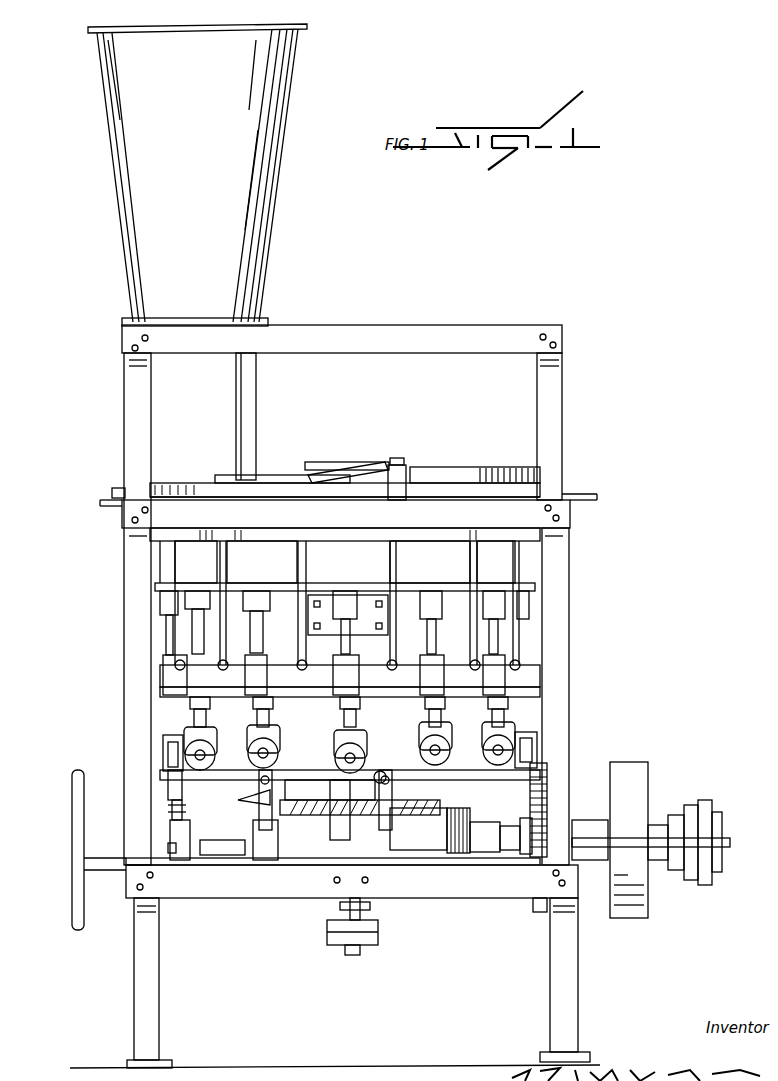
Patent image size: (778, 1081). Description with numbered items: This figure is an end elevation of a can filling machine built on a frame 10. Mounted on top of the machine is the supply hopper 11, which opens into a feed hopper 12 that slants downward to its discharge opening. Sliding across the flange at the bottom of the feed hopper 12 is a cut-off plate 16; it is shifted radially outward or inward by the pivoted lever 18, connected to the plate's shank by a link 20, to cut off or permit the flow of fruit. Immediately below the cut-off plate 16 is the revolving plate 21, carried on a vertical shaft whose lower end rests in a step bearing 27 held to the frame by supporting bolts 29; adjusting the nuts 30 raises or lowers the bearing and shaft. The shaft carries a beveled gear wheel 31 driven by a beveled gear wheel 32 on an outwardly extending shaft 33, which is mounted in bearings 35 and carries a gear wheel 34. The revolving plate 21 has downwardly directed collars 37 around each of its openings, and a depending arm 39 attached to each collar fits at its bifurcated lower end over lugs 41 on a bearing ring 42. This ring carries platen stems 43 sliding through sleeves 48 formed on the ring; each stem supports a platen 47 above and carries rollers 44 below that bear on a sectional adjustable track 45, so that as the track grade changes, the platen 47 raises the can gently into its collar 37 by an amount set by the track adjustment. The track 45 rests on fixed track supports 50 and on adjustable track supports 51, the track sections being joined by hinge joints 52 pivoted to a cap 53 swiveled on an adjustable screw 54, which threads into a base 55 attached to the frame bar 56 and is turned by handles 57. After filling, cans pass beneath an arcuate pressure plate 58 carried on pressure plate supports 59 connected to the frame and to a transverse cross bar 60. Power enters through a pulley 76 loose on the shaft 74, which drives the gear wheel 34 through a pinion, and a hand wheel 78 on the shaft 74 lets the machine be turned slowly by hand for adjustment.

The frame 10 is at (133, 432).
The supply hopper 11 is at (280, 180).
The feed hopper 12 is at (258, 380).
The cut-off plate 16 is at (270, 475).
The lever 18 is at (322, 462).
The link 20 is at (350, 465).
The revolving plate 21 is at (560, 494).
The step bearing 27 is at (327, 938).
The supporting bolts 29 is at (362, 935).
The nuts 30 is at (348, 955).
The beveled gear wheel 31 is at (300, 775).
The beveled gear wheel 32 is at (458, 855).
The outwardly extending shaft 33 is at (528, 860).
The gear wheel 34 is at (548, 768).
The bearings 35 is at (588, 820).
The collars 37 is at (280, 545).
The depending arm 39 is at (218, 567).
The lugs 41 is at (228, 662).
The bearing ring 42 is at (162, 680).
The platen stems 43 is at (168, 633).
The rollers 44 is at (240, 748).
The sectional adjustable track 45 is at (168, 782).
The platen 47 is at (158, 586).
The sleeve 48 is at (210, 692).
The track supports 50 is at (500, 800).
The adjustable track supports 51 is at (190, 832).
The hinge joints 52 is at (386, 772).
The cap 53 is at (272, 784).
The adjustable screw 54 is at (172, 818).
The base 55 is at (168, 847).
The frame bar 56 is at (236, 896).
The handles 57 is at (160, 808).
The pressure plate 58 is at (440, 470).
The pressure plate supports 59 is at (490, 468).
The transverse cross bar 60 is at (400, 465).
The shaft 74 is at (230, 845).
The pulley 76 is at (634, 768).
The hand wheel 78 is at (74, 890).